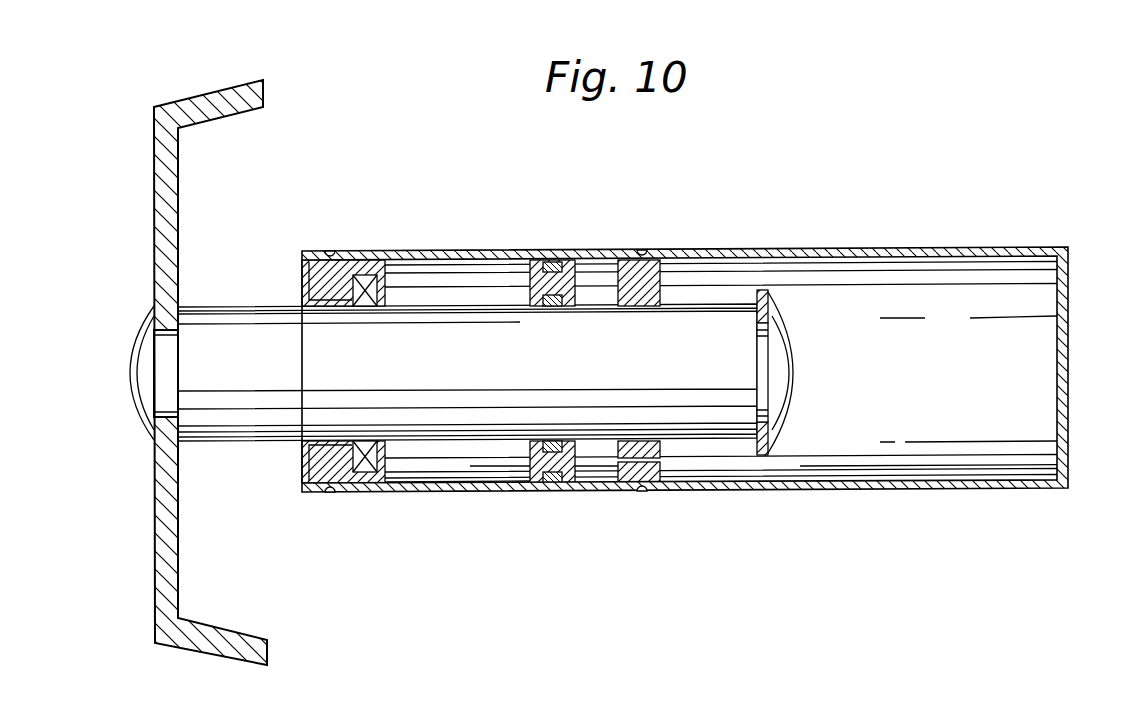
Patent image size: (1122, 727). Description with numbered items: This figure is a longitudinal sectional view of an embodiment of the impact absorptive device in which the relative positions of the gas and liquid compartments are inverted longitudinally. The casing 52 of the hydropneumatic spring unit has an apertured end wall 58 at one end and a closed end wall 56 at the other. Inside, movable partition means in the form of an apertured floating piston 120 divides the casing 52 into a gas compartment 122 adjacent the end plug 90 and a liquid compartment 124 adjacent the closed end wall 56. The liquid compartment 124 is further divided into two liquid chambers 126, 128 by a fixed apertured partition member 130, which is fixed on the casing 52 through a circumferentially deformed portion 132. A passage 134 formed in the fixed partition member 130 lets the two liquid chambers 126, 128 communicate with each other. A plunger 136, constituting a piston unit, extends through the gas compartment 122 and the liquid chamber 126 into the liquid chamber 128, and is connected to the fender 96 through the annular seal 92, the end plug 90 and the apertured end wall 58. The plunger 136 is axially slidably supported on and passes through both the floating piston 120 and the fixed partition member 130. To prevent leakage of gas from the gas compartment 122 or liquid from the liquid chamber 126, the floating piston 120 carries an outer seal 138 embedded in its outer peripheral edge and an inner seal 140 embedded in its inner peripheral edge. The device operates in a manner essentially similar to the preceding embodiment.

The casing 52 is at (846, 249).
The closed end wall 56 is at (1069, 268).
The apertured end wall 58 is at (302, 468).
The end plug 90 is at (322, 268).
The annular seal 92 is at (368, 273).
The fender 96 is at (180, 224).
The apertured floating piston 120 is at (520, 470).
The gas compartment 122 is at (452, 486).
The liquid compartment 124 is at (927, 400).
The liquid chamber 126 is at (600, 480).
The liquid chamber 128 is at (850, 468).
The fixed apertured partition member 130 is at (660, 281).
The circumferentially deformed portion 132 is at (643, 262).
The passage 134 is at (666, 464).
The plunger 136 is at (487, 377).
The outer seal 138 is at (553, 262).
The inner seal 140 is at (531, 292).